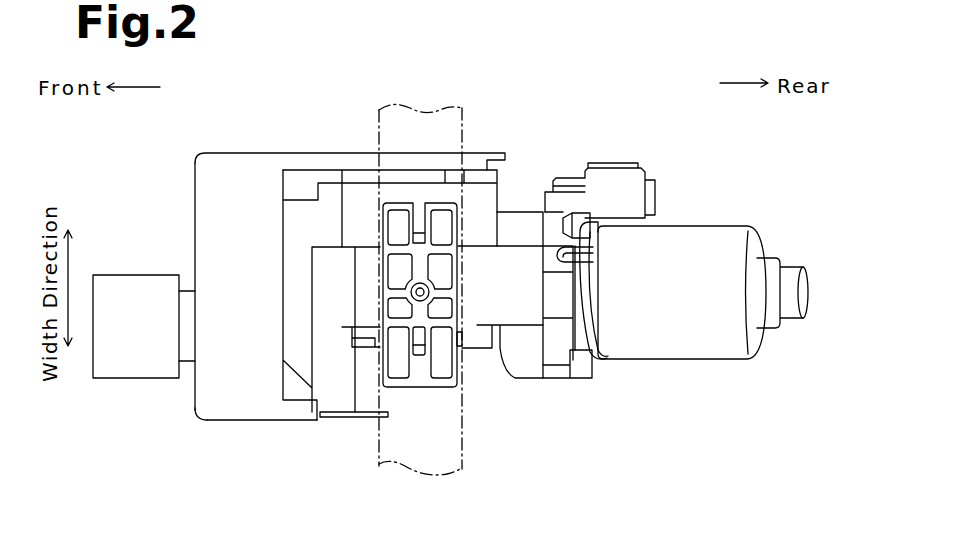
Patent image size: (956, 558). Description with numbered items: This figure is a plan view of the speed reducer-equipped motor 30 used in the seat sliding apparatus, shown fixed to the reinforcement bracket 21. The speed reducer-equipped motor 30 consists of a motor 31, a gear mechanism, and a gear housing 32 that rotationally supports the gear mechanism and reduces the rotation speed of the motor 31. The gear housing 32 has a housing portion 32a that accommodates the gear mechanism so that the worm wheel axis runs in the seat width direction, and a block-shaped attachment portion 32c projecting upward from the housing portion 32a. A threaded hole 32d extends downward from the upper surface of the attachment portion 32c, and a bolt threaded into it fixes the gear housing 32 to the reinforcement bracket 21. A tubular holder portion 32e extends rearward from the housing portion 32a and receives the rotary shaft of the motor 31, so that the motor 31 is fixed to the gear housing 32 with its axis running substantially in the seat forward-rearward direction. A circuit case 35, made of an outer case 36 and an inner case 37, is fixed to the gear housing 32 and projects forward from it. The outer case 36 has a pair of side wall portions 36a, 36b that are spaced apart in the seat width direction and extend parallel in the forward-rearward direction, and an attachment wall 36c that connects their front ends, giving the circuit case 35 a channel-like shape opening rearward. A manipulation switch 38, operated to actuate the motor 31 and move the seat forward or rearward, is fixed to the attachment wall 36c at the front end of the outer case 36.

The reinforcement bracket 21 is at (466, 123).
The speed reducer-equipped motor 30 is at (675, 121).
The motor 31 is at (685, 348).
The gear housing 32 is at (522, 215).
The housing portion 32a is at (363, 402).
The attachment portion 32c is at (443, 382).
The threaded hole 32d is at (428, 291).
The holder portion 32e is at (537, 348).
The circuit case 35 is at (143, 177).
The outer case 36 is at (195, 186).
The side wall portion 36a is at (323, 152).
The side wall portion 36b is at (266, 421).
The attachment wall 36c is at (195, 394).
The inner case 37 is at (305, 202).
The manipulation switch 38 is at (128, 365).